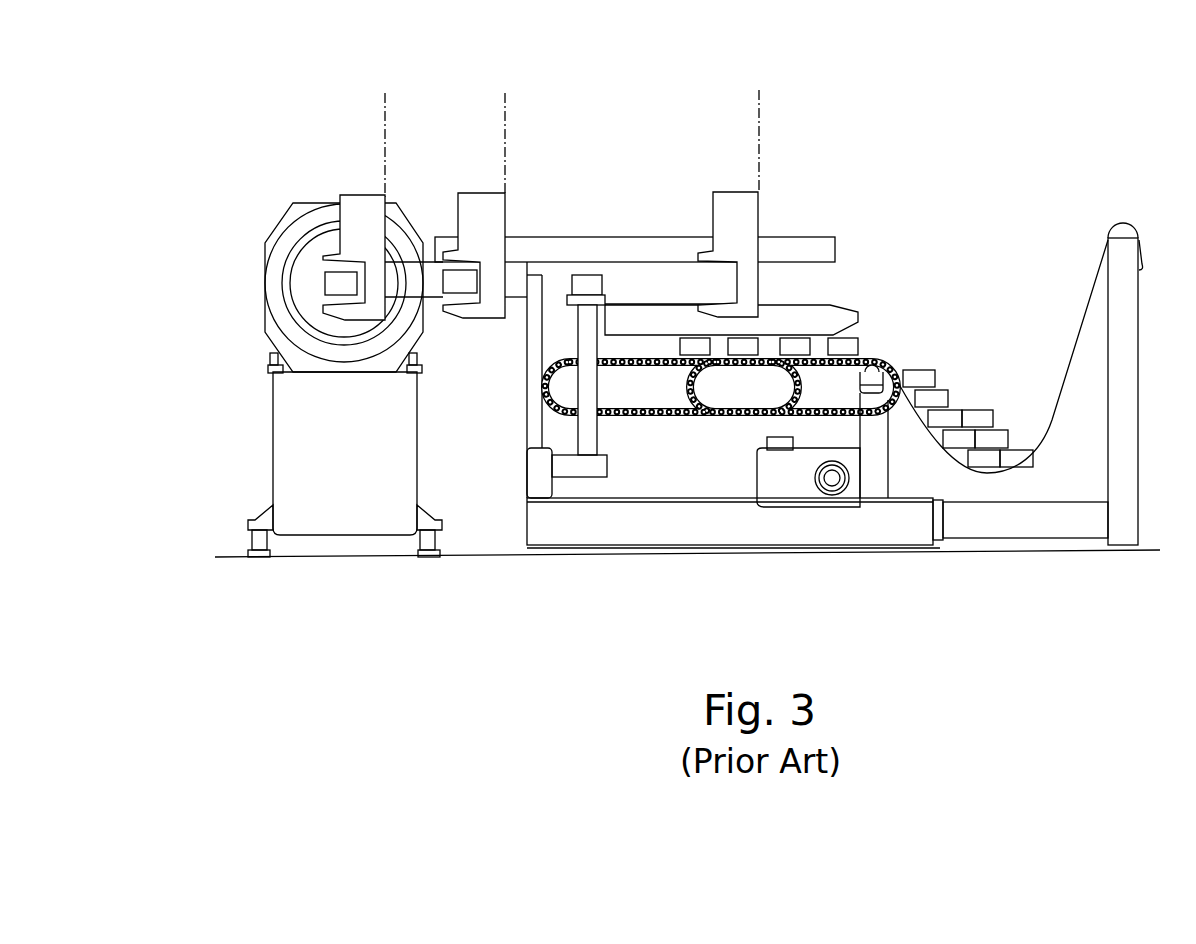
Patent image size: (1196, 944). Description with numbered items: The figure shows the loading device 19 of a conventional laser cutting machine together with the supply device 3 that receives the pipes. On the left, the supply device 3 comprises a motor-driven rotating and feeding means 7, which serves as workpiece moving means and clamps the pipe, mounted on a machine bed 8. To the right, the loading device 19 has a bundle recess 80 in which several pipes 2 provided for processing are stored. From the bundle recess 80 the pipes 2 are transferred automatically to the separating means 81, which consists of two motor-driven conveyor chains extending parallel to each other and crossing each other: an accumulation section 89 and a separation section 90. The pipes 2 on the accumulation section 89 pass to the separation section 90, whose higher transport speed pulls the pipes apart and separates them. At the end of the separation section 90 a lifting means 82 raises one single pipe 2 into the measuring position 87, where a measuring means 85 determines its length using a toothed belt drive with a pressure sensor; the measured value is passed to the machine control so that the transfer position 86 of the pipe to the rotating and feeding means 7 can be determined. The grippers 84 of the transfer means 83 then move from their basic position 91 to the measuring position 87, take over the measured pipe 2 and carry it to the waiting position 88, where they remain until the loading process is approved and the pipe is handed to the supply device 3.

The pipe 2 is at (818, 467).
The supply device 3 is at (237, 327).
The rotating and feeding means 7 is at (317, 245).
The machine bed 8 is at (352, 492).
The loading device 19 is at (960, 175).
The bundle recess 80 is at (1025, 380).
The separating means 81 is at (718, 476).
The lifting means 82 is at (583, 447).
The transfer means 83 is at (822, 175).
The grippers 84 is at (734, 200).
The measuring means 85 is at (530, 347).
The transfer position 86 is at (385, 106).
The measuring position 87 is at (582, 248).
The waiting position 88 is at (505, 106).
The accumulation section 89 is at (866, 405).
The separation section 90 is at (625, 366).
The basic position 91 is at (759, 102).